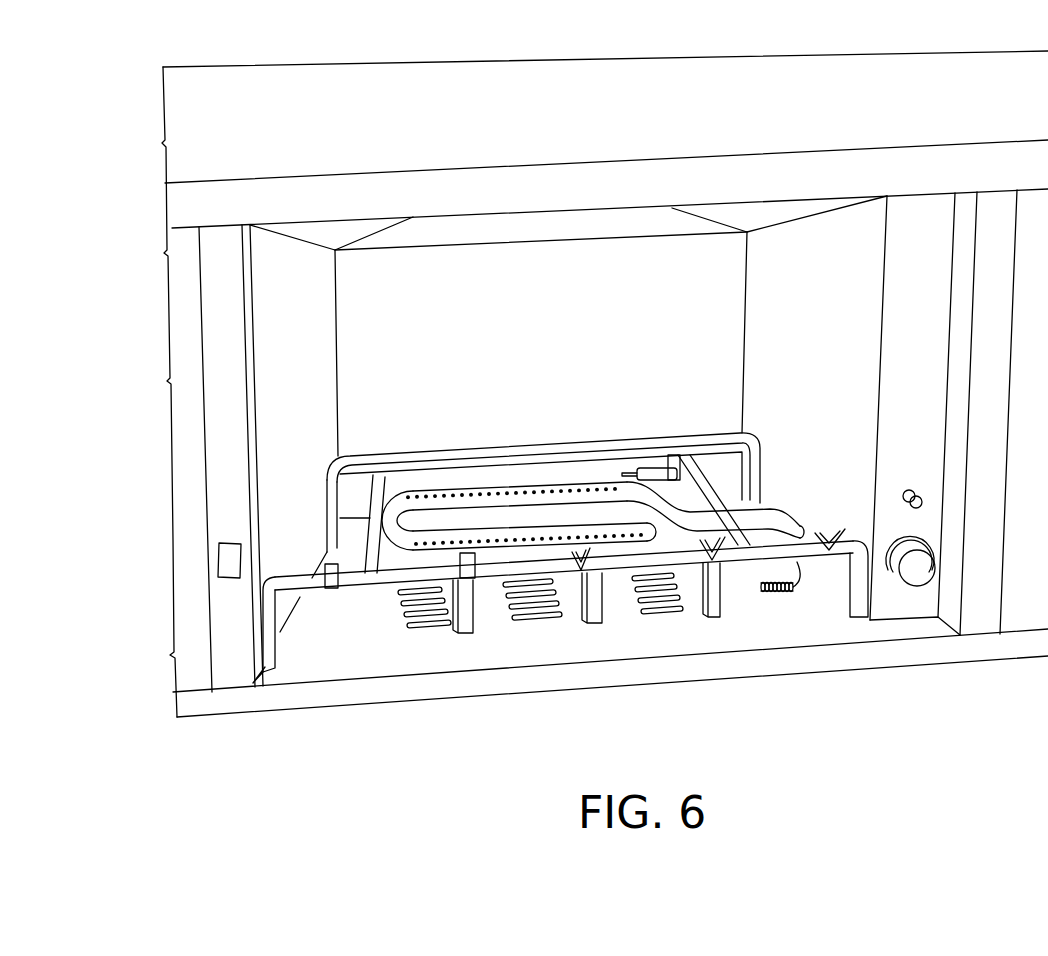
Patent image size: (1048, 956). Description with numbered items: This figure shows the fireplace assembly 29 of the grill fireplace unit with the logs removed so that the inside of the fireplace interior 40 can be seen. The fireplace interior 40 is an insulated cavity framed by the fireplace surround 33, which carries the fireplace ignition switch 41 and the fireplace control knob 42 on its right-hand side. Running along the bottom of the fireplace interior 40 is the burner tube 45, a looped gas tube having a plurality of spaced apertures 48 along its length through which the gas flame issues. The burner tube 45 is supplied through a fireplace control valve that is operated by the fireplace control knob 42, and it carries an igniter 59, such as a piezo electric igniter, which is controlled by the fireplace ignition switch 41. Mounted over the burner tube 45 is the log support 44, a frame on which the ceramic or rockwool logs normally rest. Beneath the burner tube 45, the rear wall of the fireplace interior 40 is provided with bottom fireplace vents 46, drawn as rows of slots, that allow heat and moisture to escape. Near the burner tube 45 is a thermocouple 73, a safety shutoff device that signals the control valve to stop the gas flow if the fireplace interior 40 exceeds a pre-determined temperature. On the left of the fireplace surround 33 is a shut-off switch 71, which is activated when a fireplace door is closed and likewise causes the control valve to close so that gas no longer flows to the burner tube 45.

The fireplace assembly 29 is at (270, 327).
The fireplace surround 33 is at (890, 603).
The fireplace interior 40 is at (557, 351).
The fireplace ignition switch 41 is at (912, 488).
The fireplace control knob 42 is at (918, 574).
The log support 44 is at (360, 462).
The burner tube 45 is at (467, 493).
The bottom fireplace vents 46 is at (425, 628).
The spaced apertures 48 is at (613, 489).
The igniter 59 is at (655, 467).
The shut-off switch 71 is at (230, 561).
The thermocouple 73 is at (780, 594).